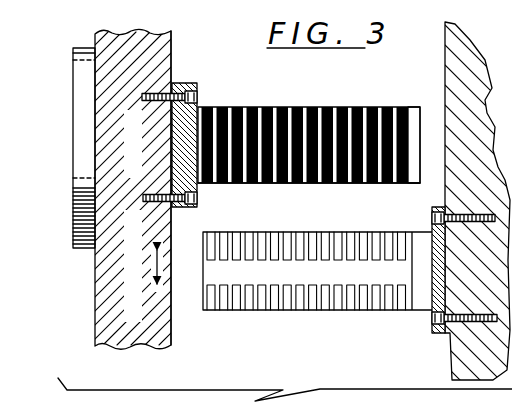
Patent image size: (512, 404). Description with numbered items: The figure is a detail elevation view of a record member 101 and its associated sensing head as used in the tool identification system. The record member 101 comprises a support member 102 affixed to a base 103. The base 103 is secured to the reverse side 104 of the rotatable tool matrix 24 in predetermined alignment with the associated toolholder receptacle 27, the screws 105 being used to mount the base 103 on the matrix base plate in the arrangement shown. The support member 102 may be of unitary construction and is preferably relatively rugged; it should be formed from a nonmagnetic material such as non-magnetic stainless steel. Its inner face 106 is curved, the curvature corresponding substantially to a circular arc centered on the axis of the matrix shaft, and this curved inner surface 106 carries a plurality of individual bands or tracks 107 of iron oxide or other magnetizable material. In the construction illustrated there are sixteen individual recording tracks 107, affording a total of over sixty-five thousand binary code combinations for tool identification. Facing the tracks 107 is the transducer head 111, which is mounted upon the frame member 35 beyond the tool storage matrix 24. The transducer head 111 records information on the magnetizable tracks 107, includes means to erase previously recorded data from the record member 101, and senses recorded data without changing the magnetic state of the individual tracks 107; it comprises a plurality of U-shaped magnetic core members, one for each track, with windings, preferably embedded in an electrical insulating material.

The tool matrix 24 is at (153, 43).
The toolholder receptacle 27 is at (72, 63).
The reverse side of tool matrix 104 is at (171, 67).
The base 103 is at (187, 81).
The screws 105 is at (197, 95).
The record member 101 is at (309, 125).
The recording tracks 107 is at (357, 106).
The inner face of support member 106 is at (415, 118).
The support member 102 is at (413, 184).
The transducer head 111 is at (231, 314).
The frame member 35 is at (458, 350).